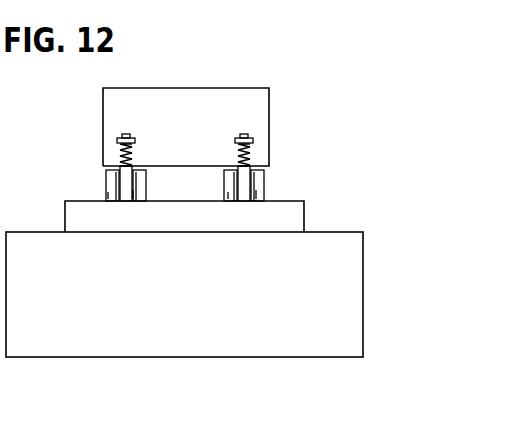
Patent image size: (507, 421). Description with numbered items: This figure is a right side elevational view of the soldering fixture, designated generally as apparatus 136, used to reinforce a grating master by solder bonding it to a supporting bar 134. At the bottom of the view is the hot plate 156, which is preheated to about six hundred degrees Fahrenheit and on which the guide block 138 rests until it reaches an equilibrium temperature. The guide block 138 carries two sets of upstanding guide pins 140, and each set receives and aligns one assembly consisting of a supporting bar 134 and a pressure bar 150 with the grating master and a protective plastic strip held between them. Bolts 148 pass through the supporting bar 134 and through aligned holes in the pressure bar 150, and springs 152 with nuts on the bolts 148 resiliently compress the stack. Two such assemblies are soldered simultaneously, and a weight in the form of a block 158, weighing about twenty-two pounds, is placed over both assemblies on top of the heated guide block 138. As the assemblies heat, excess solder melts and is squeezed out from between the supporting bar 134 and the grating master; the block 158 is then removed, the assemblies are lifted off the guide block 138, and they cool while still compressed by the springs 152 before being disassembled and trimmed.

The apparatus 136 is at (376, 180).
The block 158 is at (202, 96).
The guide block 138 is at (307, 212).
The hot plate 156 is at (350, 279).
The bolts 148 is at (126, 136).
The springs 152 is at (120, 158).
The supporting bar 134 is at (111, 189).
The guide pins 140 is at (131, 193).
The pressure bar 150 is at (239, 162).